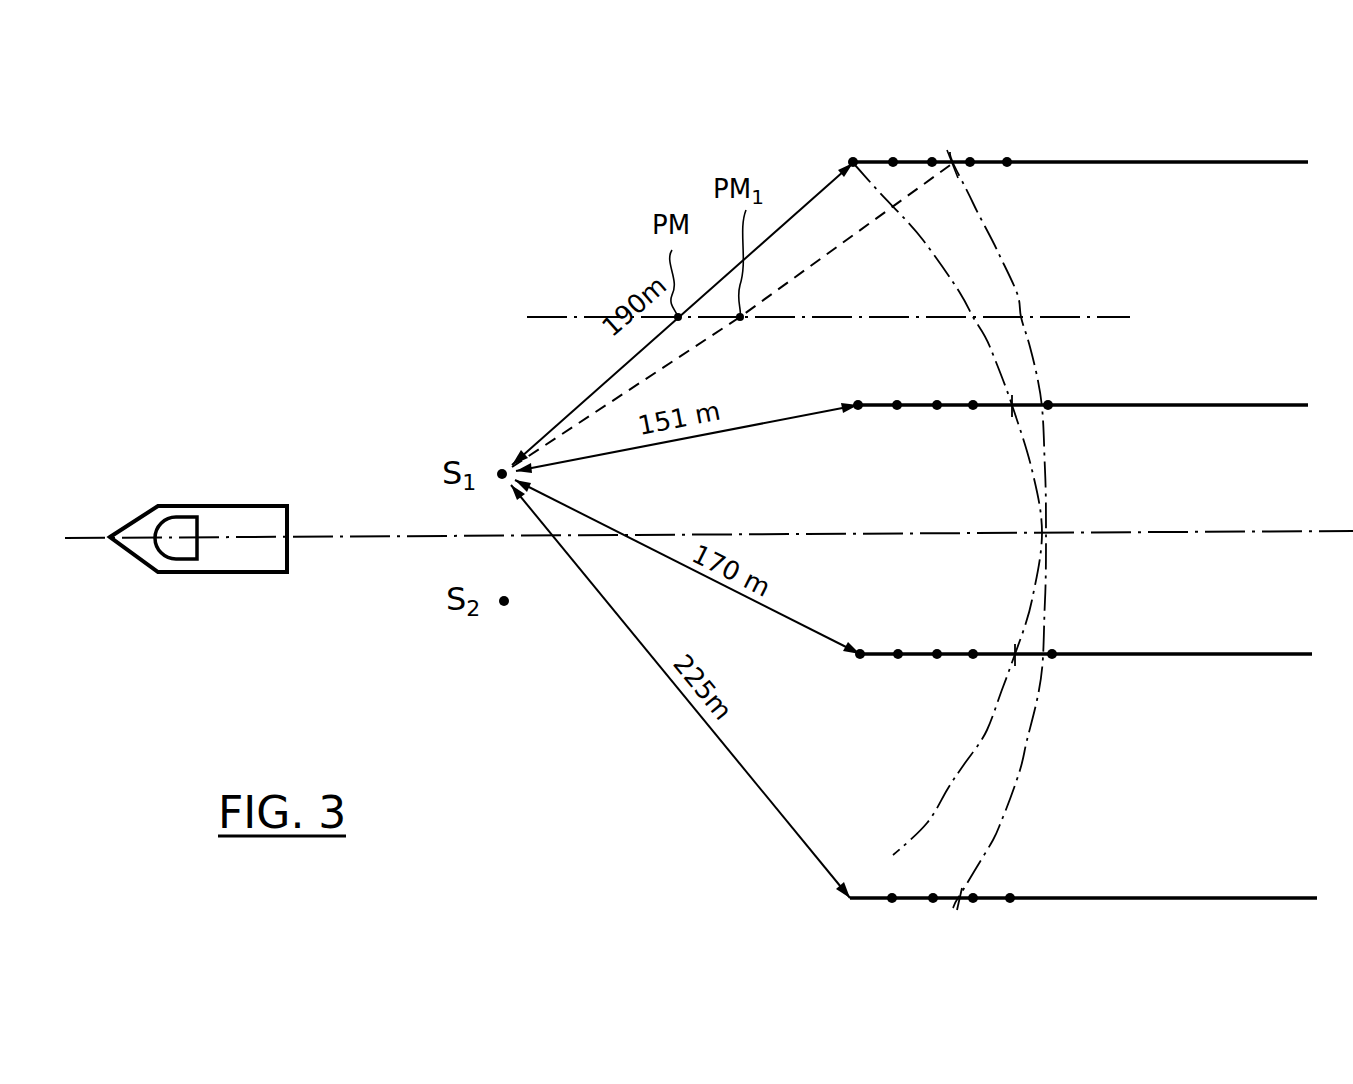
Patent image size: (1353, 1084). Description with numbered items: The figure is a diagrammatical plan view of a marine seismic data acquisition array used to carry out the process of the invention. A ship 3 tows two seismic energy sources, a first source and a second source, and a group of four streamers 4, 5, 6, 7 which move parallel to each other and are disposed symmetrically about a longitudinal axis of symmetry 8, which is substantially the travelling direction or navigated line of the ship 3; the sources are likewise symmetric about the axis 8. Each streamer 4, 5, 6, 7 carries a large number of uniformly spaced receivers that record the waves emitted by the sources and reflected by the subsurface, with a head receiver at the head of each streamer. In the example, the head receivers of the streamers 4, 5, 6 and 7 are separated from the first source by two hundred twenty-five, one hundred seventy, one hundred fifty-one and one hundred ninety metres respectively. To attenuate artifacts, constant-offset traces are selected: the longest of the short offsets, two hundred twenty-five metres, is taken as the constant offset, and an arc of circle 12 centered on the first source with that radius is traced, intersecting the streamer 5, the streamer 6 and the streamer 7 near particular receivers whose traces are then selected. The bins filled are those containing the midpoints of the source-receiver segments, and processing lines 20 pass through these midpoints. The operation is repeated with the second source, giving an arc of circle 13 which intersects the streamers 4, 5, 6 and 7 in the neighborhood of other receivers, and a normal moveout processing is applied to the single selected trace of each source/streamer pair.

The ship 3 is at (238, 506).
The streamer 4 is at (1178, 898).
The streamer 5 is at (1218, 654).
The streamer 6 is at (1232, 405).
The streamer 7 is at (1243, 162).
The longitudinal axis of symmetry 8 is at (1213, 532).
The arc of circle 12 is at (965, 765).
The arc of circle 13 is at (1020, 770).
The processing line 20 is at (552, 317).